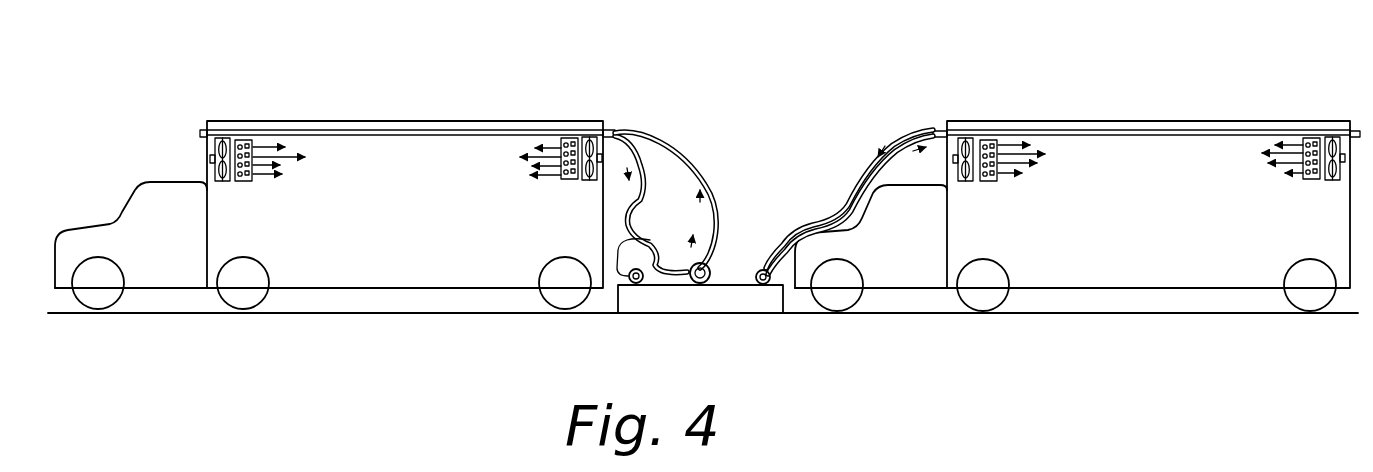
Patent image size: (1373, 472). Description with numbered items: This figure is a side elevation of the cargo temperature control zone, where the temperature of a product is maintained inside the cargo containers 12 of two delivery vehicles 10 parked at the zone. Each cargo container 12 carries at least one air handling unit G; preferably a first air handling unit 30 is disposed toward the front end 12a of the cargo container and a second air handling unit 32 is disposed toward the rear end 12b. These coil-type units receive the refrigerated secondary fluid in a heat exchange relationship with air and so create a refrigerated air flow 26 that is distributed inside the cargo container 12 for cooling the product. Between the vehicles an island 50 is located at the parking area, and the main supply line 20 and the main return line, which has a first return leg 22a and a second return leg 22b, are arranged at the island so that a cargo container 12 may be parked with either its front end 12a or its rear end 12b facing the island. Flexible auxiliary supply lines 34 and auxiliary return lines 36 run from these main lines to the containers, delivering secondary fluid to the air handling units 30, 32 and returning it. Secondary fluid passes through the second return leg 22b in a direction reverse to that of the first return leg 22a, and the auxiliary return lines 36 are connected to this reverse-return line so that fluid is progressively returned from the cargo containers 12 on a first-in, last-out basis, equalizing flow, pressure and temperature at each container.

The delivery vehicle 10 is at (172, 124).
The cargo container 12 is at (428, 232).
The front end of cargo container 12a is at (206, 172).
The rear end of cargo container 12b is at (613, 128).
The main supply line 20 is at (701, 284).
The first return leg 22a is at (764, 286).
The second return leg 22b is at (629, 287).
The refrigerated air flow 26 is at (526, 157).
The first air handling unit 30 is at (241, 185).
The second air handling unit 32 is at (576, 182).
The auxiliary supply line 34 is at (706, 177).
The auxiliary return line 36 is at (291, 155).
The island 50 is at (661, 313).
The air handling unit G is at (528, 187).